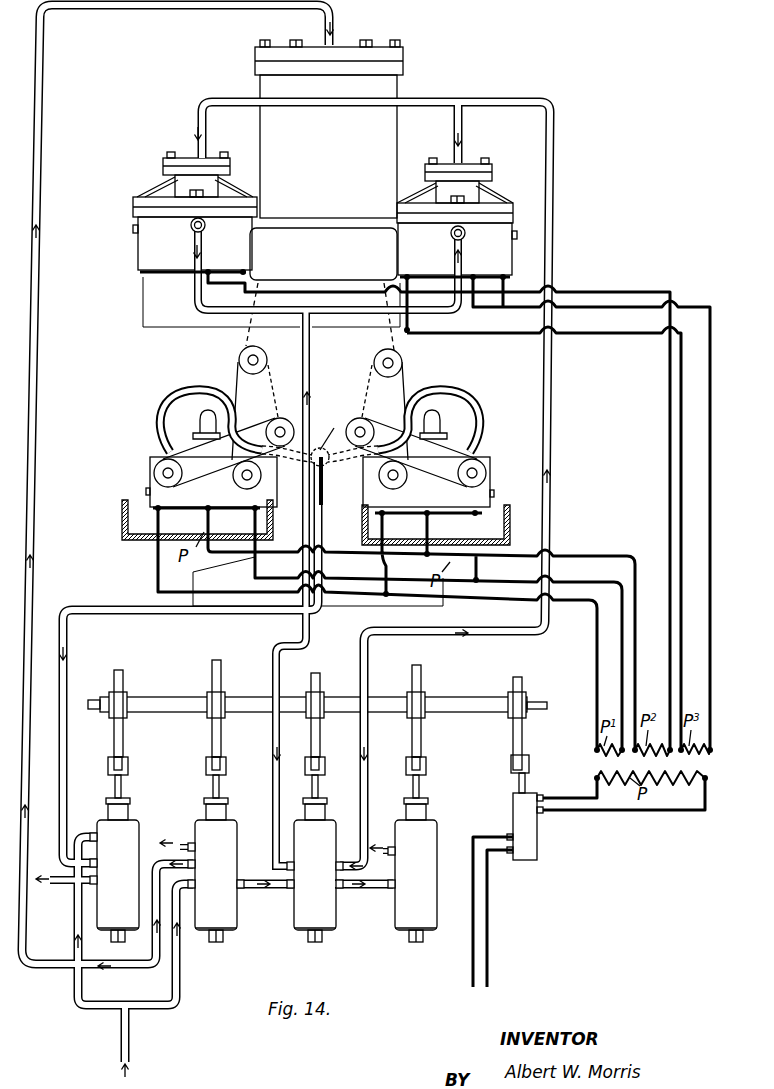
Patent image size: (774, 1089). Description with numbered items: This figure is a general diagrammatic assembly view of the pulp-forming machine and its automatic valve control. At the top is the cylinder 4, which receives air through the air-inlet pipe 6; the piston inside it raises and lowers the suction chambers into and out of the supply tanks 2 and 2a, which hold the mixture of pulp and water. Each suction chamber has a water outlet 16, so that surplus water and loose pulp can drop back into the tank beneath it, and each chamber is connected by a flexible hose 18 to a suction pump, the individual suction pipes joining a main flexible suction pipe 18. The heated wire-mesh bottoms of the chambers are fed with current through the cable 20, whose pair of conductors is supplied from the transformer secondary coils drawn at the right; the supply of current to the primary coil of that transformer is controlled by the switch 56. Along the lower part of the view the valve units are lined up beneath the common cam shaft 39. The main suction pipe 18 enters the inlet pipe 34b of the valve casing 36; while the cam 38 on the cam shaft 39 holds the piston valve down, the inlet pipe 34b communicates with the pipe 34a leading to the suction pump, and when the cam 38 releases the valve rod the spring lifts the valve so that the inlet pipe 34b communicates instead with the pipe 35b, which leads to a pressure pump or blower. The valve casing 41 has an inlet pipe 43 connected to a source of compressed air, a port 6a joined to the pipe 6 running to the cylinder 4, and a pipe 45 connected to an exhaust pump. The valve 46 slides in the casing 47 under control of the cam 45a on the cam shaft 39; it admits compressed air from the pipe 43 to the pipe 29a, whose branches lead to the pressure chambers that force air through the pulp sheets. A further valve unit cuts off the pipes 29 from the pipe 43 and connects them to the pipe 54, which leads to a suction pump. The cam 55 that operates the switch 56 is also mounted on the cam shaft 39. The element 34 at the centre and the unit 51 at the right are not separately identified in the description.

The cylinder 4 is at (326, 160).
The air-inlet pipe 6 is at (331, 33).
The port 6a is at (196, 864).
The supply tank 2 is at (120, 528).
The supply tank 2a is at (505, 504).
The water outlet 16 is at (200, 424).
The flexible suction hose 18 is at (196, 392).
The cable 20 is at (508, 598).
The pipe 29 is at (197, 133).
The pipe 29a is at (194, 258).
The valve 34 is at (320, 453).
The pipe 34a is at (64, 882).
The inlet pipe 34b is at (111, 867).
The pipe 35b is at (97, 836).
The valve casing 36 is at (118, 849).
The cam 38 is at (121, 670).
The cam shaft 39 is at (160, 697).
The valve casing 41 is at (216, 849).
The inlet pipe 43 is at (197, 882).
The pipe 45 is at (224, 657).
The cam 45a is at (328, 673).
The valve 46 is at (424, 681).
The casing 47 is at (315, 849).
The valve casing 51 is at (432, 892).
The pipe 54 is at (390, 851).
The cam 55 is at (513, 690).
The switch 56 is at (537, 845).